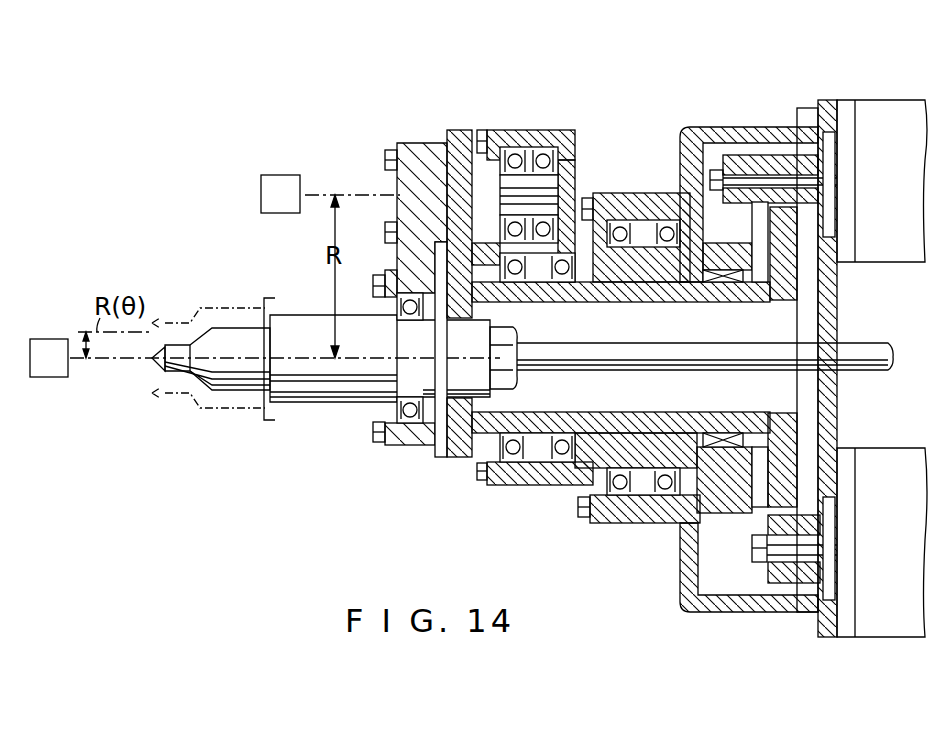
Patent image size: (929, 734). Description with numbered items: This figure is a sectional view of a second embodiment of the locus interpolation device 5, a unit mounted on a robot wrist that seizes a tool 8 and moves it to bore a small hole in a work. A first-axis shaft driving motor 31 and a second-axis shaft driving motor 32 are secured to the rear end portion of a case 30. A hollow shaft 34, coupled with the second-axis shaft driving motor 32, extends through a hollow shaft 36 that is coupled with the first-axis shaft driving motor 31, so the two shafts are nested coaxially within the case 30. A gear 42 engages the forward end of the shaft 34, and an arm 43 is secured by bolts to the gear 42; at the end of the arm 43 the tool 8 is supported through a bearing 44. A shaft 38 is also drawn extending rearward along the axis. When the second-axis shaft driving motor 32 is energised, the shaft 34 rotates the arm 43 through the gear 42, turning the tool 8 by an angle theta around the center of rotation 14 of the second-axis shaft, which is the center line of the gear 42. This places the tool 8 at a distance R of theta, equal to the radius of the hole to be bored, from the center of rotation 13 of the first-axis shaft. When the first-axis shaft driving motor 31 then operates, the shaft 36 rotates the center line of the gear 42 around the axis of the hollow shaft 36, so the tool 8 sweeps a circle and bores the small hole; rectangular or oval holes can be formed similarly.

The locus interpolation device 5 is at (617, 163).
The tool 8 is at (231, 335).
The center of rotation of T1 shaft 13 is at (105, 360).
The center of rotation of T2 shaft 14 is at (318, 195).
The case 30 is at (750, 130).
The T1 shaft driving motor 31 is at (885, 100).
The T2 shaft driving motor 32 is at (895, 627).
The hollow shaft 34 is at (560, 288).
The hollow shaft 36 is at (641, 290).
The drive shaft 38 is at (712, 356).
The gear 42 is at (460, 140).
The arm 43 is at (418, 155).
The bearing 44 is at (416, 423).